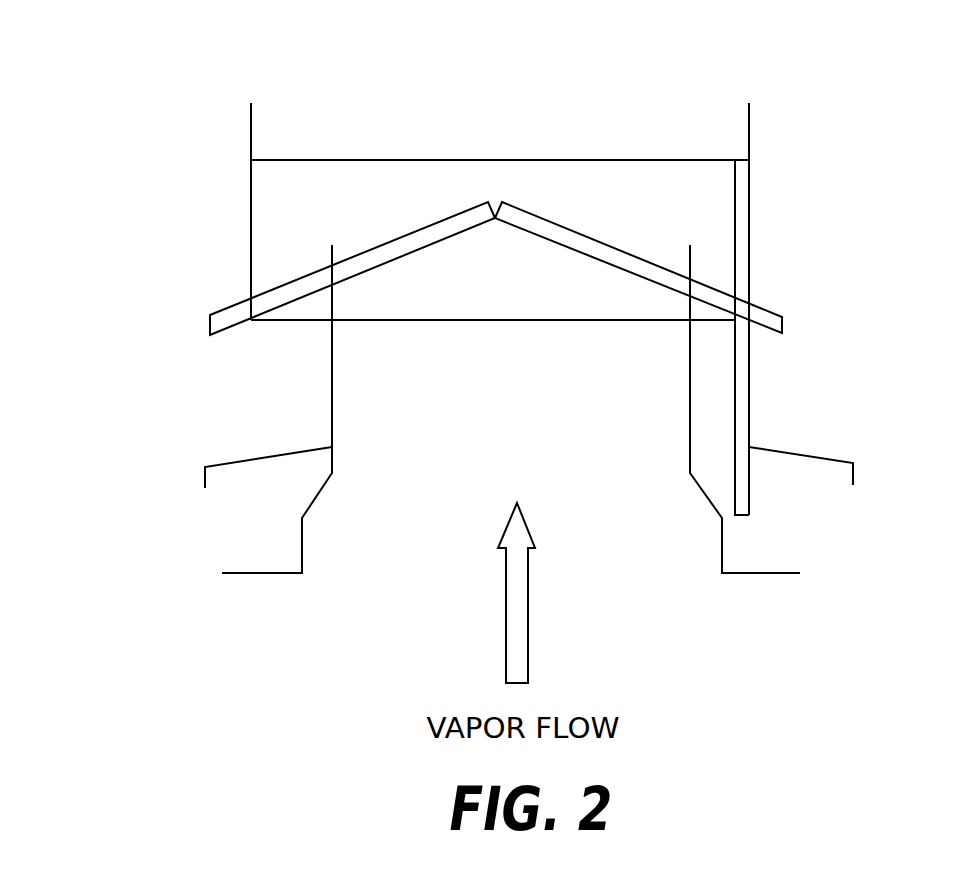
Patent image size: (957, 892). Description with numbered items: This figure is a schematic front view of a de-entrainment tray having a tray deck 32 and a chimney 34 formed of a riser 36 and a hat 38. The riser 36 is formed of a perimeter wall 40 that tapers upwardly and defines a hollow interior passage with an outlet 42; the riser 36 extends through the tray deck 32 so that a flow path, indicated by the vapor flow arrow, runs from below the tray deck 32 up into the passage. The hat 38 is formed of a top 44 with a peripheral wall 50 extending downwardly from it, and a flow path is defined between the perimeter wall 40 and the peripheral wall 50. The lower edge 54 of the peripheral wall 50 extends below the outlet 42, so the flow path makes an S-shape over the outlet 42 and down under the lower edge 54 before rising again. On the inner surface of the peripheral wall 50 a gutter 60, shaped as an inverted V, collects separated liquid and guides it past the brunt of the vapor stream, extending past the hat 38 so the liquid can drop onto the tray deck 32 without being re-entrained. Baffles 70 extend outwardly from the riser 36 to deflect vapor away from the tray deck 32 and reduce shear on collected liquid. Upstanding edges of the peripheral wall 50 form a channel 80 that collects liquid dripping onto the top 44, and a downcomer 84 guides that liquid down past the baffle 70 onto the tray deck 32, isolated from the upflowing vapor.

The tray deck 32 is at (790, 570).
The chimney 34 is at (872, 133).
The riser 36 is at (302, 520).
The hat 38 is at (251, 130).
The perimeter wall 40 is at (332, 417).
The outlet 42 is at (690, 250).
The top 44 is at (400, 160).
The peripheral wall 50 is at (251, 207).
The lower edge 54 is at (663, 322).
The gutter 60 is at (548, 221).
The baffle 70 is at (828, 463).
The channel 80 is at (700, 160).
The downcomer 84 is at (749, 177).